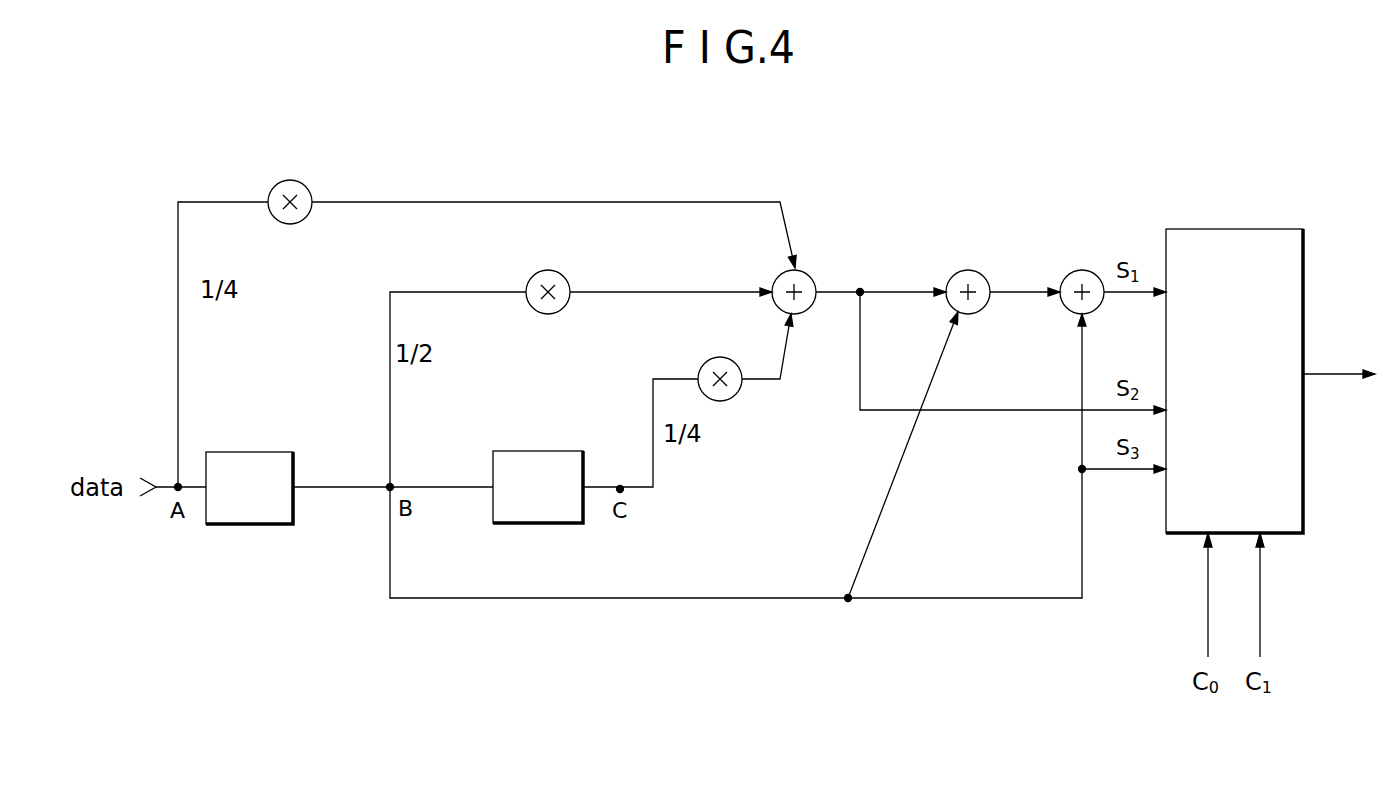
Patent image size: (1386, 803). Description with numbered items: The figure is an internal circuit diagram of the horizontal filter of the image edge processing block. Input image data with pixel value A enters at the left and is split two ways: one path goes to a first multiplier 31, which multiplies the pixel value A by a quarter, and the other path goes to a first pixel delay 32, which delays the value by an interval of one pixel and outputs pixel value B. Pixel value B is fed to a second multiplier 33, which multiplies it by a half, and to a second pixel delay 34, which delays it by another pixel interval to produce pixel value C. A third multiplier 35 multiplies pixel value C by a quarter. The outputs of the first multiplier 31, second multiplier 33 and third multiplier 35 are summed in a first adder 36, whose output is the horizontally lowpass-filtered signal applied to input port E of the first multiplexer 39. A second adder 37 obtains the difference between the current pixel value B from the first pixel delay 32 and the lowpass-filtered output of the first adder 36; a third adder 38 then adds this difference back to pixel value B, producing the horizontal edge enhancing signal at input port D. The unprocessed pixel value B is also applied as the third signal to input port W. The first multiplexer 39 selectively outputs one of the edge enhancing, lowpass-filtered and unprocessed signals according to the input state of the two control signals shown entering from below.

The first multiplier 31 is at (290, 180).
The first pixel delay 32 is at (245, 503).
The second multiplier 33 is at (547, 272).
The second pixel delay 34 is at (530, 508).
The third multiplier 35 is at (737, 388).
The first adder 36 is at (805, 278).
The second adder 37 is at (960, 272).
The third adder 38 is at (1074, 272).
The first multiplexer 39 is at (1236, 244).